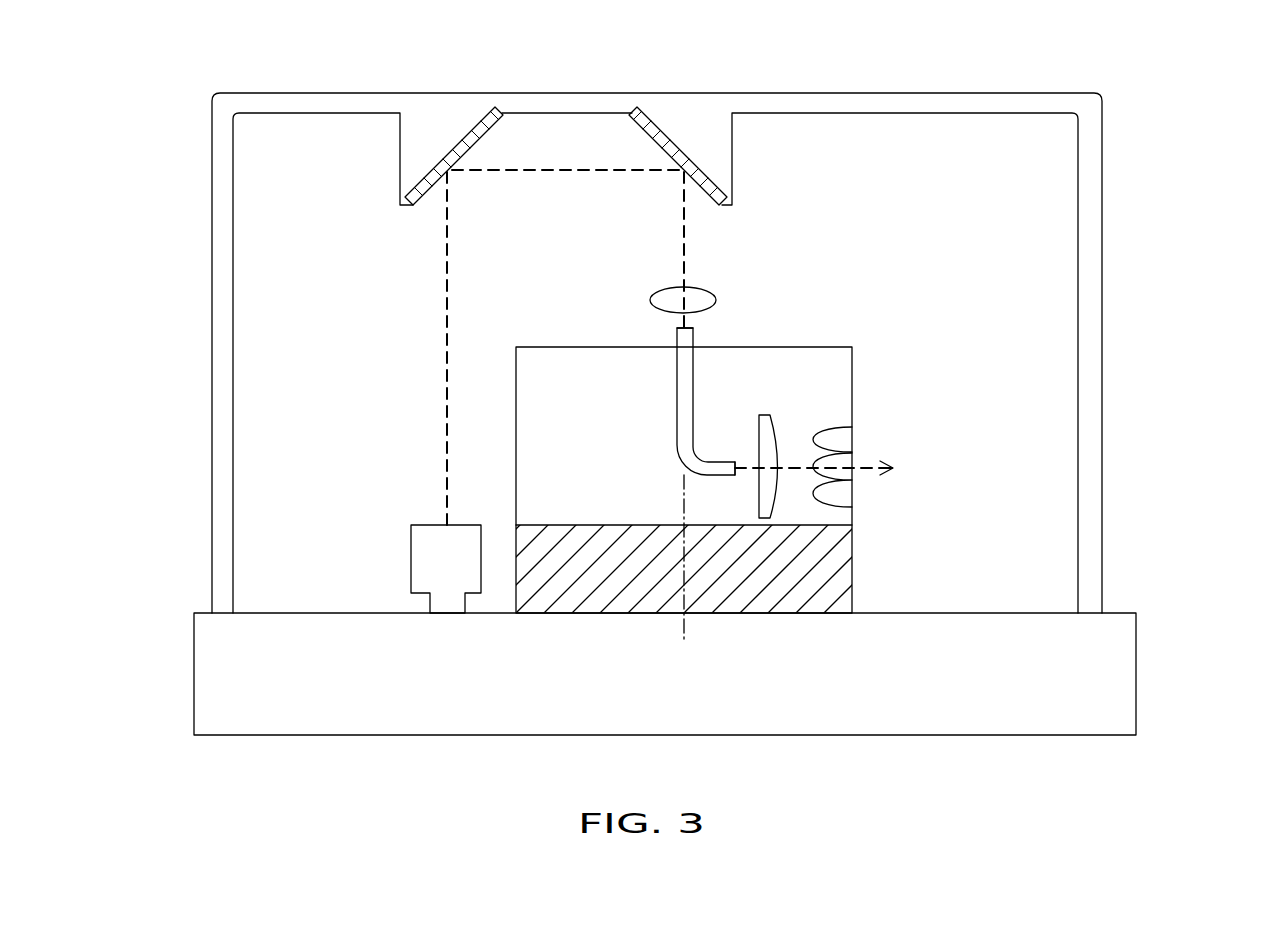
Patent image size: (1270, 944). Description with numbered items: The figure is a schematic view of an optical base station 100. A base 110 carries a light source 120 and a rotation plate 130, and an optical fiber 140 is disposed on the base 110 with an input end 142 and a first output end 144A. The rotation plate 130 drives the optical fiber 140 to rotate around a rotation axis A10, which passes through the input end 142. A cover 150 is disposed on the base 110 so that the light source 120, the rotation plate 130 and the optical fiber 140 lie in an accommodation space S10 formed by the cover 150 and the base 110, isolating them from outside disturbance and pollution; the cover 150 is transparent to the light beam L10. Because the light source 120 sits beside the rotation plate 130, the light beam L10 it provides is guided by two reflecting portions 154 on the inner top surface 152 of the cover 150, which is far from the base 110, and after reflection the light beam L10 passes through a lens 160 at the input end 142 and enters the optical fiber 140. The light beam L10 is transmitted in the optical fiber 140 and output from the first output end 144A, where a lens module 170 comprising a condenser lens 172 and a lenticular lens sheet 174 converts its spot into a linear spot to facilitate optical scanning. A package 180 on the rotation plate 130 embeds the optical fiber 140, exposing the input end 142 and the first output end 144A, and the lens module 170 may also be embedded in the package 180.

The optical base station 100 is at (1255, 713).
The base 110 is at (218, 686).
The light source 120 is at (420, 524).
The rotation plate 130 is at (830, 593).
The optical fiber 140 is at (688, 380).
The input end 142 is at (700, 330).
The first output end 144A is at (735, 482).
The cover 150 is at (220, 498).
The inner top surface 152 is at (922, 128).
The reflecting portion 154 is at (462, 146).
The lens 160 is at (716, 292).
The lens module 170 is at (876, 440).
The condenser lens 172 is at (771, 425).
The lenticular lens sheet 174 is at (838, 440).
The package 180 is at (530, 346).
The accommodation space S10 is at (272, 195).
The light beam L10 is at (445, 291).
The rotation axis A10 is at (683, 480).